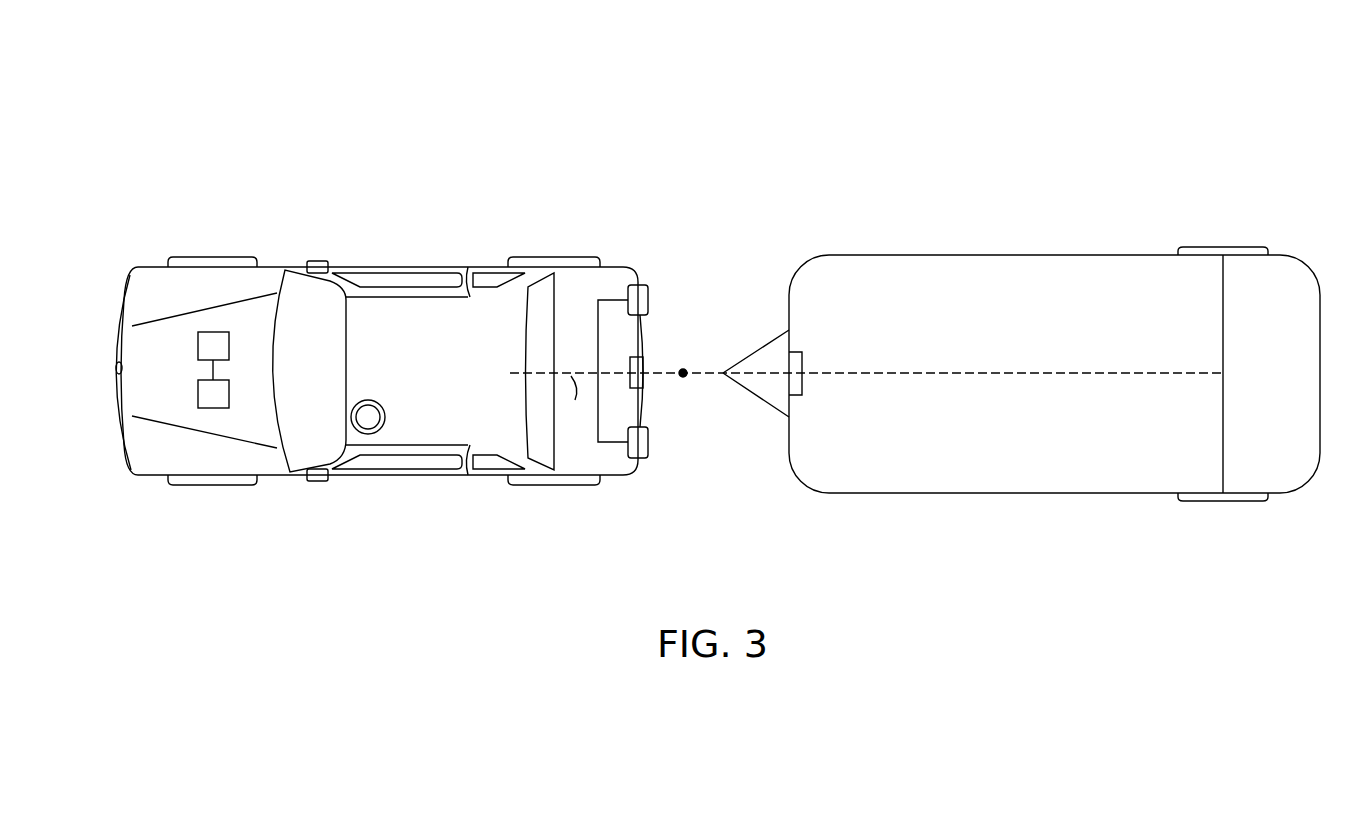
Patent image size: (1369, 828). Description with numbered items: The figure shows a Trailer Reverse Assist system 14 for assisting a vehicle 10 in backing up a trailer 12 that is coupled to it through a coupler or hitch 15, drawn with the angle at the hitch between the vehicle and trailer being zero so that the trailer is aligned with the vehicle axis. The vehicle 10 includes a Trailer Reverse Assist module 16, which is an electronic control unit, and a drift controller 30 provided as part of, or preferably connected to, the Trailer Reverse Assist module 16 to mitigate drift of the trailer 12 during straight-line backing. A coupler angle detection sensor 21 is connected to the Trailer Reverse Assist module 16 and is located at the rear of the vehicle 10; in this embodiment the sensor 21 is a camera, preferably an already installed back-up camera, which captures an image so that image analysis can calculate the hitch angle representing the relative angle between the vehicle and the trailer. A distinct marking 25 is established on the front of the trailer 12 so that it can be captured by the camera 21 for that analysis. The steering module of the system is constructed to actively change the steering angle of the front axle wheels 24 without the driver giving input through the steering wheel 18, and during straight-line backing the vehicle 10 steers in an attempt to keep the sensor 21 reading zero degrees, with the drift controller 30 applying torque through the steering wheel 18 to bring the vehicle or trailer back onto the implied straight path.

The Trailer Reverse Assist system 14 is at (134, 116).
The vehicle 10 is at (469, 266).
The trailer 12 is at (1052, 254).
The front axle wheels 24 is at (215, 256).
The drift controller 30 is at (198, 346).
The Trailer Reverse Assist module 16 is at (198, 393).
The steering wheel 18 is at (386, 418).
The coupler angle detection sensor 21 is at (641, 385).
The coupler or hitch 15 is at (682, 368).
The distinct marking 25 is at (801, 396).